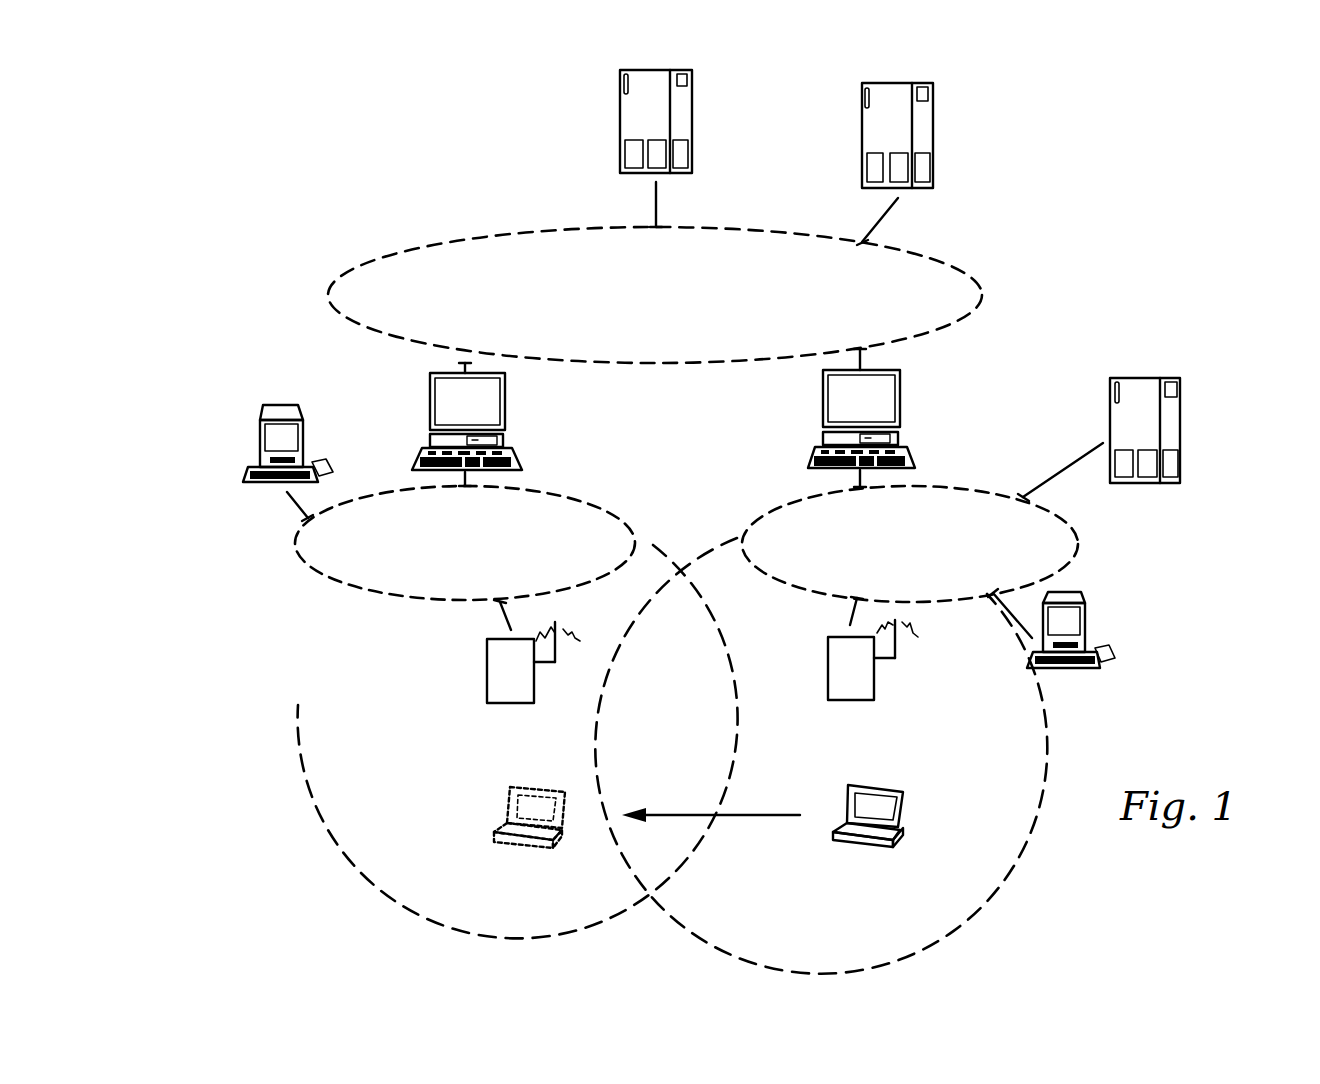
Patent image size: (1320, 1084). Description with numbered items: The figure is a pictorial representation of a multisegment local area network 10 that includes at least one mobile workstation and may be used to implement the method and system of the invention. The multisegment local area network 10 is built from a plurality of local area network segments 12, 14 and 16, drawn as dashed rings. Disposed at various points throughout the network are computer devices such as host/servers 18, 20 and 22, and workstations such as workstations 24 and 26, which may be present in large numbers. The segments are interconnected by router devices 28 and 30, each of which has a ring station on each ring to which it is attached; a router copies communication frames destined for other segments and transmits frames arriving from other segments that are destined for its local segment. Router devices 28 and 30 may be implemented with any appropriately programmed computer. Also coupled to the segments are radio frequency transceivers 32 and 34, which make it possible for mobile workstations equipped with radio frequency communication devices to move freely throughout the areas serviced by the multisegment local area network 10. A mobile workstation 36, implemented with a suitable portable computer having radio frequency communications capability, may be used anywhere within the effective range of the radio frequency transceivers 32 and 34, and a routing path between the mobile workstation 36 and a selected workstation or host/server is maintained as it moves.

The multisegment local area network 10 is at (1047, 246).
The local area network segment 12 is at (652, 378).
The local area network segment 14 is at (1082, 541).
The local area network segment 16 is at (292, 567).
The host/server 18 is at (954, 141).
The host/server 20 is at (704, 135).
The host/server 22 is at (1196, 435).
The workstation 24 is at (1106, 621).
The workstation 26 is at (242, 442).
The router device 28 is at (918, 410).
The router device 30 is at (522, 423).
The radio frequency transceiver 32 is at (893, 688).
The radio frequency transceiver 34 is at (470, 688).
The mobile workstation 36 is at (924, 800).